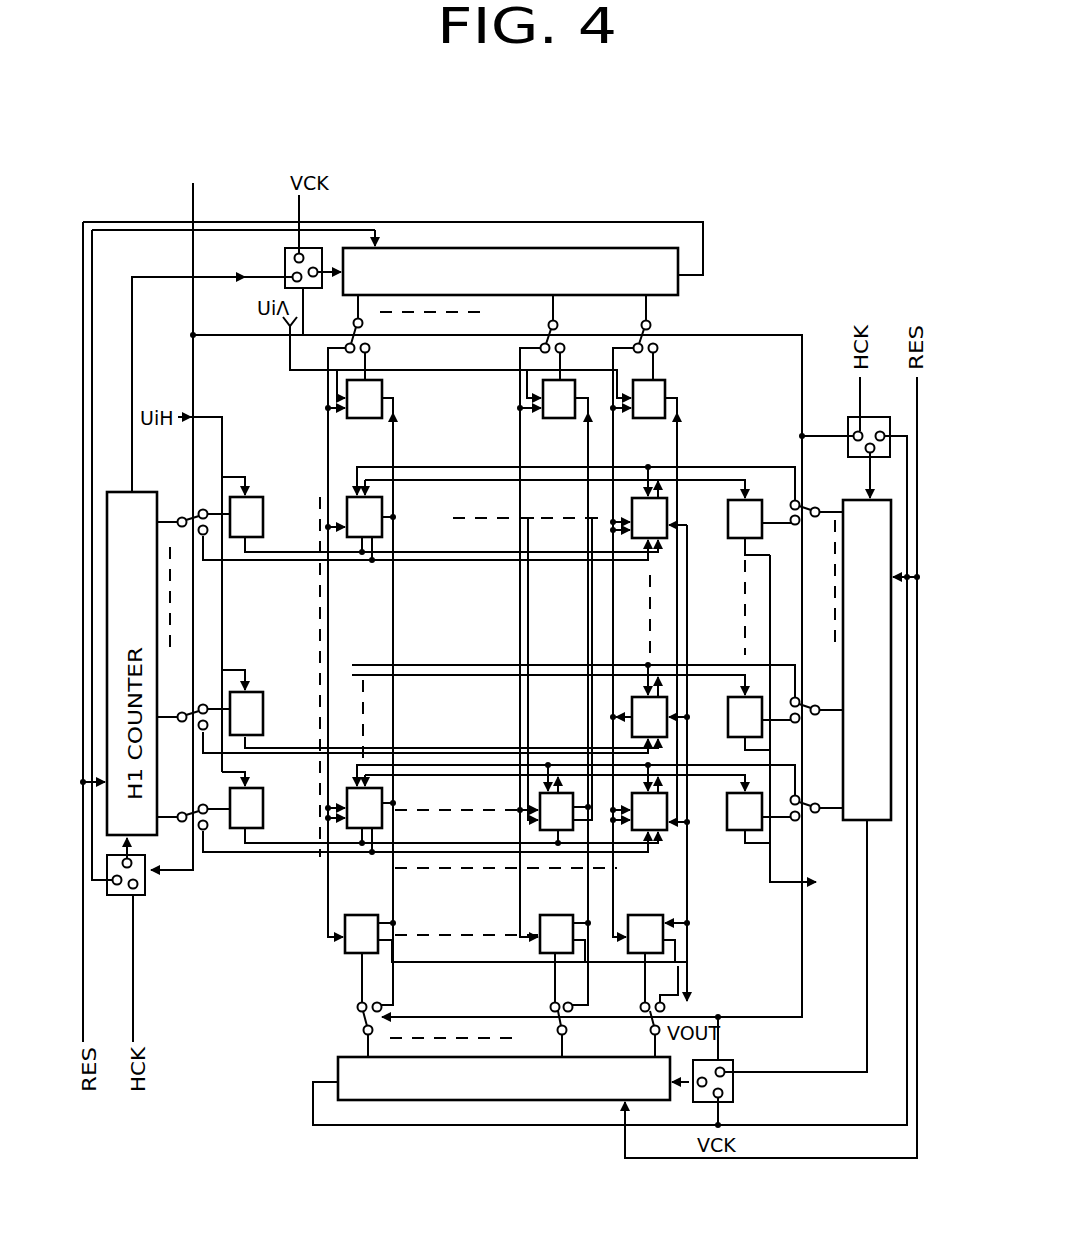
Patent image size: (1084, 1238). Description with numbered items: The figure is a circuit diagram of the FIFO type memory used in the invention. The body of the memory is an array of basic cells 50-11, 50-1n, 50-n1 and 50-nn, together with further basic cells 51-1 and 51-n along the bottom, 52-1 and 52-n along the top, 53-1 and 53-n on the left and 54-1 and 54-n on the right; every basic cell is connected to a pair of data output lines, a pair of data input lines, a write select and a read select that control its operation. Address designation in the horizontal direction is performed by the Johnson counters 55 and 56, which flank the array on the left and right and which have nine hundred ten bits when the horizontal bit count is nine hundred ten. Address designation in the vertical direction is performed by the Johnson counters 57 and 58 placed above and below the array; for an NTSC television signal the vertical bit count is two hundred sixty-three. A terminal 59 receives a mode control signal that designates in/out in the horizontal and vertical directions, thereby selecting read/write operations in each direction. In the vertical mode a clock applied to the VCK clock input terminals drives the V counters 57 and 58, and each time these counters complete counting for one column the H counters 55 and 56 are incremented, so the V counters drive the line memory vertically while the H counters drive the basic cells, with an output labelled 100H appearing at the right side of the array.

The basic cell 50-11 is at (380, 512).
The basic cell 50-1n is at (660, 510).
The basic cell 50-n1 is at (378, 804).
The basic cell 50-nn is at (662, 832).
The basic cell 51-1 is at (375, 920).
The basic cell 51-n is at (655, 920).
The basic cell 52-1 is at (379, 389).
The basic cell 52-n is at (665, 390).
The basic cell 53-1 is at (263, 506).
The basic cell 53-n is at (263, 808).
The basic cell 54-1 is at (752, 507).
The basic cell 54-n is at (728, 818).
The Johnson counter 55 is at (150, 828).
The Johnson counter 56 is at (880, 820).
The Johnson counter 57 is at (662, 258).
The Johnson counter 58 is at (375, 1100).
The terminal 59 is at (197, 186).
The horizontal output signal 100H is at (783, 732).